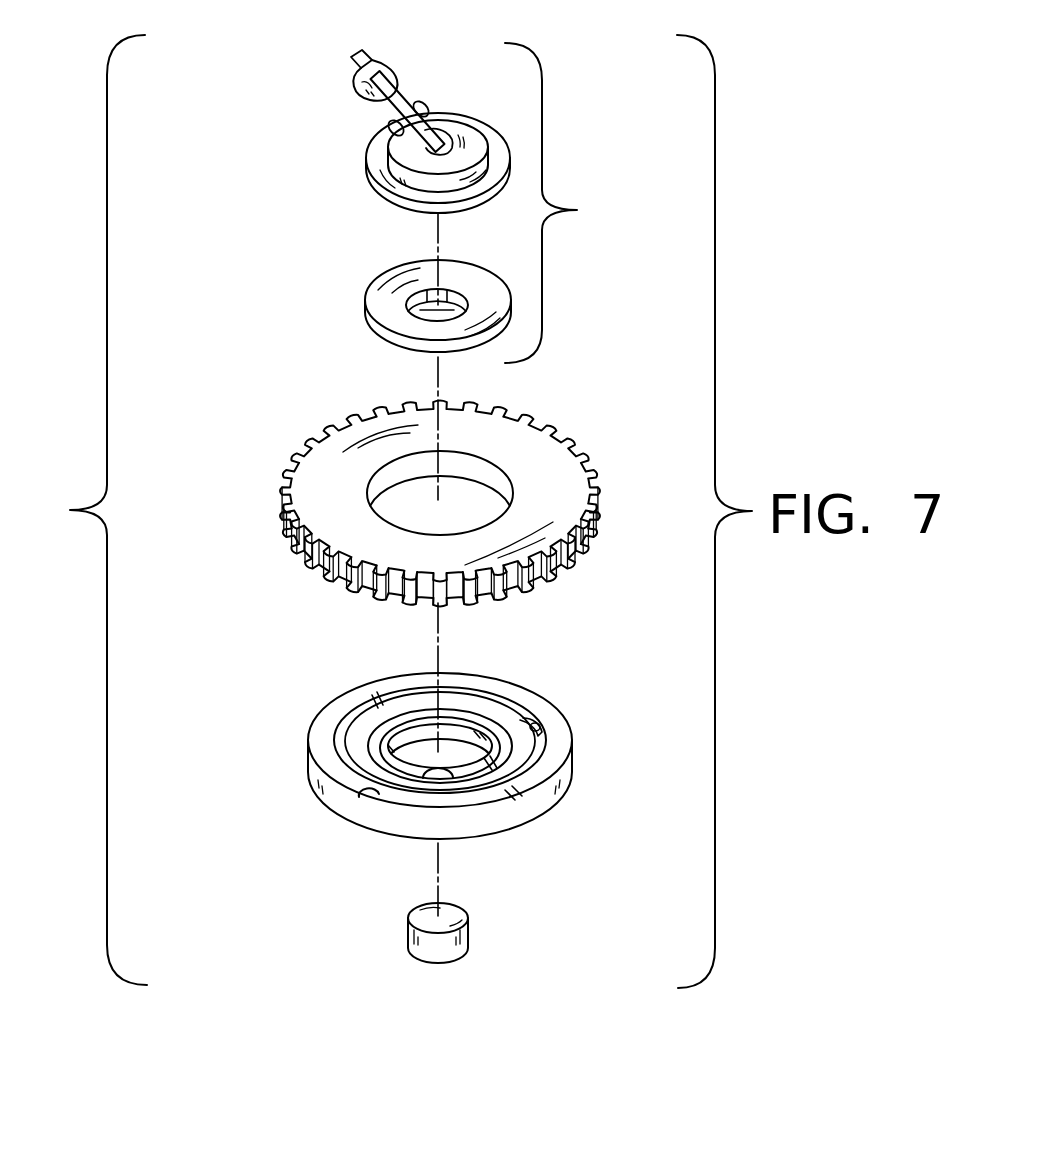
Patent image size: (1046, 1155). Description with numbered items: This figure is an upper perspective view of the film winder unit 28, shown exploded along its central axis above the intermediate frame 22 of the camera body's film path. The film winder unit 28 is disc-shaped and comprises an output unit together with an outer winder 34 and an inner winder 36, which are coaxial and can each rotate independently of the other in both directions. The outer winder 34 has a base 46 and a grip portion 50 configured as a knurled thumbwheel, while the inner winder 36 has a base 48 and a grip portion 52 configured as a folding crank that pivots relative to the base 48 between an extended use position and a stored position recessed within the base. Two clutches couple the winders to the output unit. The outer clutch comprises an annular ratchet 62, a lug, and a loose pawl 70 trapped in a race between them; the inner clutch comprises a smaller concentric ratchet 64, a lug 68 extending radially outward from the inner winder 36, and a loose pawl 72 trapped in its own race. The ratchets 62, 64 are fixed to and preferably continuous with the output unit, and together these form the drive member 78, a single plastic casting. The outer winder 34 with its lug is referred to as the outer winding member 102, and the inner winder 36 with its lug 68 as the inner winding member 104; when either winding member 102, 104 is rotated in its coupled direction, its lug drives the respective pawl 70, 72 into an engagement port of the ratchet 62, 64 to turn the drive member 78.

The intermediate frame 22 is at (468, 937).
The film winder unit 28 is at (391, 511).
The outer winder 34 is at (413, 525).
The inner winder 36 is at (593, 203).
The base 46 is at (324, 488).
The base 48 is at (372, 150).
The grip portion 50 is at (515, 593).
The grip portion 52 is at (403, 88).
The ratchet 62 is at (423, 775).
The ratchet 64 is at (367, 787).
The lug 68 is at (460, 302).
The loose pawl 70 is at (533, 733).
The loose pawl 72 is at (490, 770).
The drive member 78 is at (308, 767).
The outer winding member 102 is at (413, 525).
The inner winding member 104 is at (593, 203).